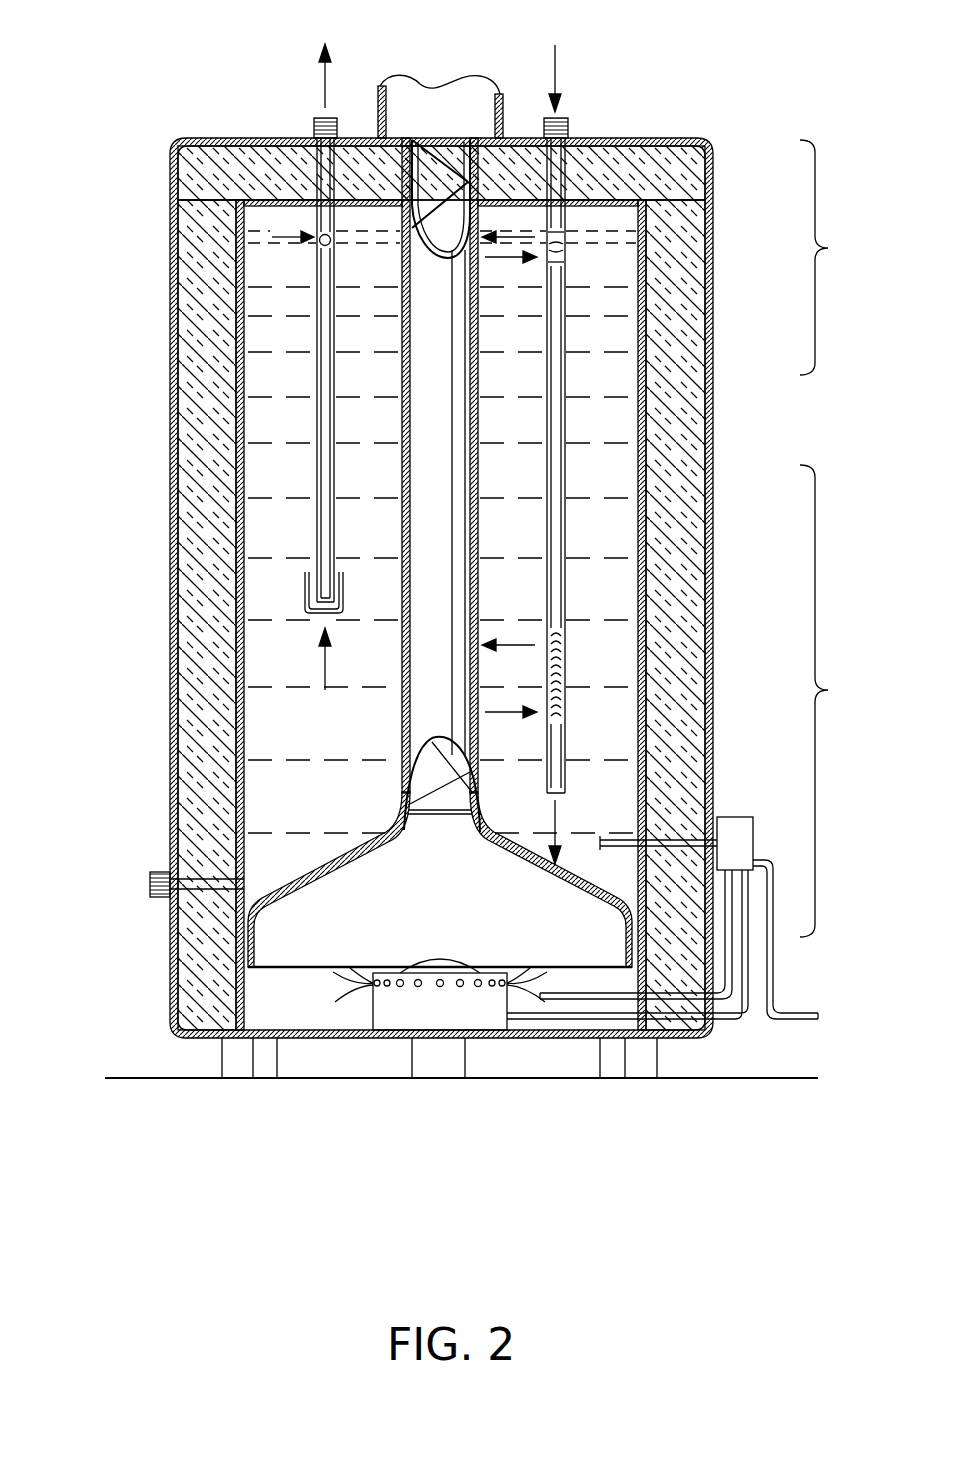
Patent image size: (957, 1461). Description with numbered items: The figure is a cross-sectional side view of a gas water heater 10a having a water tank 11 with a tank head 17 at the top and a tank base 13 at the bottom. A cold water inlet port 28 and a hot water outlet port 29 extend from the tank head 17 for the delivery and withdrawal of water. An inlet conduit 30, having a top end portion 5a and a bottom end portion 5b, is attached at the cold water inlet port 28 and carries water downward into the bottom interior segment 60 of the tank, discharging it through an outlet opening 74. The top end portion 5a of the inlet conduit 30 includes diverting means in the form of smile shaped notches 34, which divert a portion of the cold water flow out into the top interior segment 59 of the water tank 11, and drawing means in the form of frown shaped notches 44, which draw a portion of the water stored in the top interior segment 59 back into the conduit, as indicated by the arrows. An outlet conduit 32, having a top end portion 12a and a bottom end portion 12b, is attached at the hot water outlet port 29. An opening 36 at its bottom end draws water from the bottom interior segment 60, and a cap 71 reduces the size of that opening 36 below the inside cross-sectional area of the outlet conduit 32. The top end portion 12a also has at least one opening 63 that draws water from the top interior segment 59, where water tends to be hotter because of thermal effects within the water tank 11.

The gas water heater 10a is at (134, 90).
The water tank 11 is at (240, 394).
The top end portion of the outlet conduit 12a is at (337, 115).
The bottom end portion of the outlet conduit 12b is at (307, 613).
The tank base 13 is at (322, 876).
The tank head 17 is at (277, 197).
The cold water inlet port 28 is at (543, 128).
The hot water outlet port 29 is at (306, 130).
The inlet conduit 30 is at (566, 752).
The outlet conduit 32 is at (336, 409).
The smile shaped notches 34 is at (556, 237).
The opening 36 is at (322, 610).
The frown shaped notches 44 is at (556, 259).
The top interior segment 59 is at (839, 257).
The bottom interior segment 60 is at (836, 701).
The opening 63 is at (322, 247).
The cap 71 is at (345, 590).
The outlet opening 74 is at (565, 797).
The top end portion of the inlet conduit 5a is at (573, 115).
The bottom end portion of the inlet conduit 5b is at (572, 735).